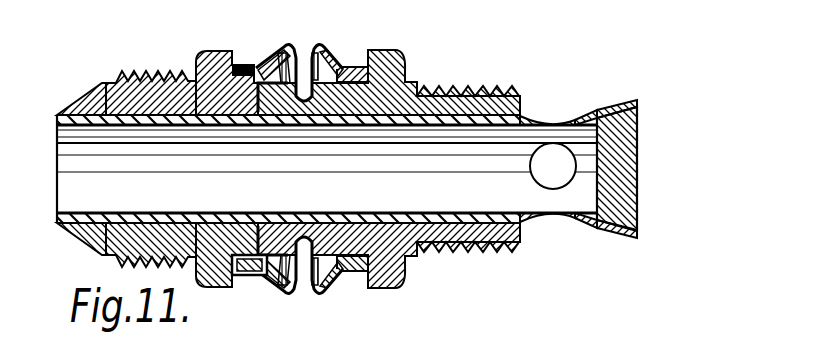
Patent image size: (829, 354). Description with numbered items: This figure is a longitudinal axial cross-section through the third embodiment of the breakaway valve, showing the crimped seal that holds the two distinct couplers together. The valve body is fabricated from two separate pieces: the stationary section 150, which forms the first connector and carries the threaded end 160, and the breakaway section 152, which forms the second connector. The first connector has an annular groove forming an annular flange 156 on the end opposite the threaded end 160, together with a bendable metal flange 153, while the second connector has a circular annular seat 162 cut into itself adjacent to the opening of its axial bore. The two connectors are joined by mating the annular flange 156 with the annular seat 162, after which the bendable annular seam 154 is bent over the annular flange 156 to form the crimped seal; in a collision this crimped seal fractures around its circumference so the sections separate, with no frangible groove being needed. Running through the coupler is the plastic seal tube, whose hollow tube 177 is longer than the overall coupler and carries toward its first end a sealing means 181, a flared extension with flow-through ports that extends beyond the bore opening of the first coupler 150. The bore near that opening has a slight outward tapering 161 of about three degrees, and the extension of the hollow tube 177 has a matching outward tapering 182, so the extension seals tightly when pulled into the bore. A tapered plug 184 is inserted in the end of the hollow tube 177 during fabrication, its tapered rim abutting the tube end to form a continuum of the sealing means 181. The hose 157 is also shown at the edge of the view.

The stationary section 150 is at (409, 49).
The breakaway section 152 is at (118, 75).
The bendable metal flange 153 is at (283, 50).
The bendable annular seam 154 is at (317, 50).
The annular flange 156 is at (252, 100).
The hose 157 is at (580, 351).
The threaded end 160 is at (470, 92).
The outward tapering 161 is at (517, 98).
The annular seat 162 is at (257, 270).
The hollow tube 177 is at (473, 250).
The sealing means 181 is at (593, 117).
The outward tapering 182 is at (627, 108).
The tapered plug 184 is at (640, 163).